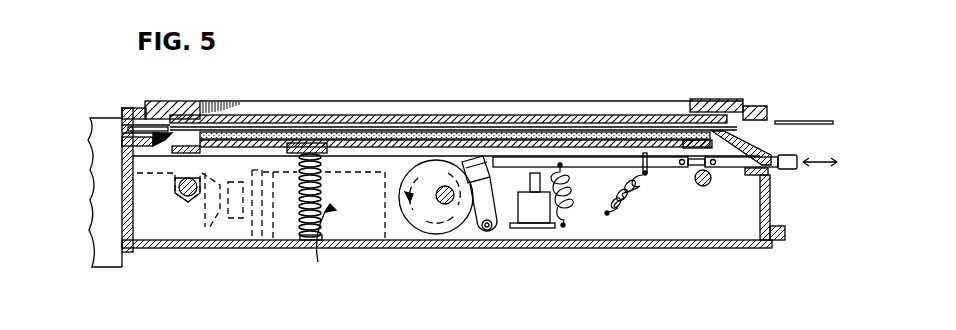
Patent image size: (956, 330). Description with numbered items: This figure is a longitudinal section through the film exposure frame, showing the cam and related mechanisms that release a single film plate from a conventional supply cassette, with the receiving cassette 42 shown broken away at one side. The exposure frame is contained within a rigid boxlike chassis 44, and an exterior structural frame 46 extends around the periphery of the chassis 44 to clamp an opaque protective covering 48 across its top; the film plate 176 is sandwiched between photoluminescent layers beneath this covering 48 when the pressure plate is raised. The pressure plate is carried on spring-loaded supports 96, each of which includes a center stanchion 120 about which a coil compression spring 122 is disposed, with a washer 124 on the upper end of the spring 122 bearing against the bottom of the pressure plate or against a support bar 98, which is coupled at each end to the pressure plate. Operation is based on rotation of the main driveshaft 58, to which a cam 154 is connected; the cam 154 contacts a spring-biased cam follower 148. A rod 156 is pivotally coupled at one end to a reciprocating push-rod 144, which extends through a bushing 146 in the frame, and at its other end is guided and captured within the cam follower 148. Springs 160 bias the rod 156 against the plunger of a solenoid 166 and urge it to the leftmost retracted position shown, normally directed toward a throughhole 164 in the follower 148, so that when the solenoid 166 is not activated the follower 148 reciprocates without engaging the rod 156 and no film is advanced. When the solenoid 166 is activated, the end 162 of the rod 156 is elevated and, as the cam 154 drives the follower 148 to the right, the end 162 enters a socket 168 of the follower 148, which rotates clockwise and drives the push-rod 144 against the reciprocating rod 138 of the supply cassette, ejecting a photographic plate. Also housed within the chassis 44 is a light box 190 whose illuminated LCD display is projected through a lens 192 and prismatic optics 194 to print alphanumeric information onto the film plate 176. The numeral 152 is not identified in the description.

The receiving cassette 42 is at (107, 125).
The chassis 44 is at (772, 186).
The exterior structural frame 46 is at (707, 100).
The protective covering 48 is at (547, 120).
The main driveshaft 58 is at (450, 203).
The spring-loaded support 96 is at (325, 257).
The support bar 98 is at (318, 150).
The center stanchion 120 is at (298, 198).
The coil compression spring 122 is at (308, 240).
The washer 124 is at (302, 152).
The reciprocating rod 138 is at (790, 155).
The reciprocating push-rod 144 is at (773, 155).
The bushing 146 is at (778, 174).
The cam follower 148 is at (490, 228).
The solenoid mount 152 is at (503, 228).
The cam 154 is at (430, 220).
The rod 156 is at (600, 158).
The springs 160 is at (572, 205).
The end of rod 162 is at (518, 112).
The throughhole 164 is at (462, 160).
The solenoid 166 is at (537, 218).
The socket 168 is at (478, 157).
The film plate 176 is at (787, 120).
The light box 190 is at (372, 225).
The lens 192 is at (216, 234).
The prismatic optics 194 is at (153, 222).